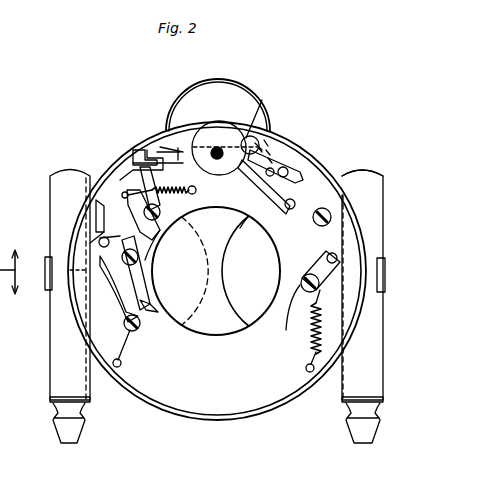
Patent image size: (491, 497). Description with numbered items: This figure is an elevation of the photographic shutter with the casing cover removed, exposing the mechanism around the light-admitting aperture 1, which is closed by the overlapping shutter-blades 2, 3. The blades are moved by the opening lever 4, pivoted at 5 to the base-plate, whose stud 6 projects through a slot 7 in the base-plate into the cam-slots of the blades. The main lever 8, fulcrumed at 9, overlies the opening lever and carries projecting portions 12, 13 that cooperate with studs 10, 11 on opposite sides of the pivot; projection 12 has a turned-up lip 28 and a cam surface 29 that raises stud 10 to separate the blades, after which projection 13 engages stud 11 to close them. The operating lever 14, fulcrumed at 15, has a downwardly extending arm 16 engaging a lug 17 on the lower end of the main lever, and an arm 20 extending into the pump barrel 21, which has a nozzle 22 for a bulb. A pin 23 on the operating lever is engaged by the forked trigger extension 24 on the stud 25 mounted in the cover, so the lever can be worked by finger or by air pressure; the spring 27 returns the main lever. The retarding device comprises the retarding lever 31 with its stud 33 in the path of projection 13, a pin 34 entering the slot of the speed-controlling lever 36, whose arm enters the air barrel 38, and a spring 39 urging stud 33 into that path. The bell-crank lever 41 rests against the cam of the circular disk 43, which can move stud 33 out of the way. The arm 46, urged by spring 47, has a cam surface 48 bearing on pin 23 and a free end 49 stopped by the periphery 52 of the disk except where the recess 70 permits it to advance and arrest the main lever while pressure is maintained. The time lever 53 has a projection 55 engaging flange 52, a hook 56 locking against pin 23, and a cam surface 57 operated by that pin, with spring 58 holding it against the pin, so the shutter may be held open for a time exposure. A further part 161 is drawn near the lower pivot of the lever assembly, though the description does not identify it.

The light-admitting aperture 1 is at (236, 335).
The shutter-blade 2 is at (199, 271).
The shutter-blade 3 is at (216, 271).
The opening lever 4 is at (258, 176).
The pivot 5 is at (303, 141).
The stud 6 is at (232, 160).
The slot 7 is at (264, 96).
The main lever 8 is at (160, 147).
The fulcrum 9 is at (133, 147).
The stud 10 is at (268, 158).
The stud 11 is at (276, 172).
The projection 12 is at (264, 140).
The projection 13 is at (330, 166).
The operating lever 14 is at (140, 275).
The fulcrum 15 is at (140, 265).
The arm 16 is at (145, 296).
The lug 17 is at (140, 312).
The arm 20 is at (72, 295).
The pump barrel 21 is at (57, 358).
The nozzle 22 is at (72, 427).
The pin 23 is at (99, 242).
The trigger extension 24 is at (100, 210).
The stud 25 is at (107, 203).
The spring 27 is at (182, 192).
The lip 28 is at (266, 150).
The cam surface 29 is at (258, 147).
The retarding lever 31 is at (300, 203).
The stud 33 is at (286, 212).
The pin 34 is at (323, 257).
The speed-controlling lever 36 is at (297, 292).
The barrel 38 is at (372, 218).
The spring 39 is at (310, 345).
The bell-crank lever 41 is at (254, 207).
The circular disk 43 is at (255, 143).
The arm 46 is at (100, 258).
The spring 47 is at (117, 358).
The cam surface 48 is at (90, 243).
The free end 49 is at (163, 150).
The periphery 52 is at (220, 148).
The time lever 53 is at (148, 240).
The projection 55 is at (180, 150).
The hook 56 is at (100, 238).
The cam surface 57 is at (168, 235).
The spring 58 is at (160, 216).
The recess 70 is at (195, 150).
The link 161 is at (133, 332).